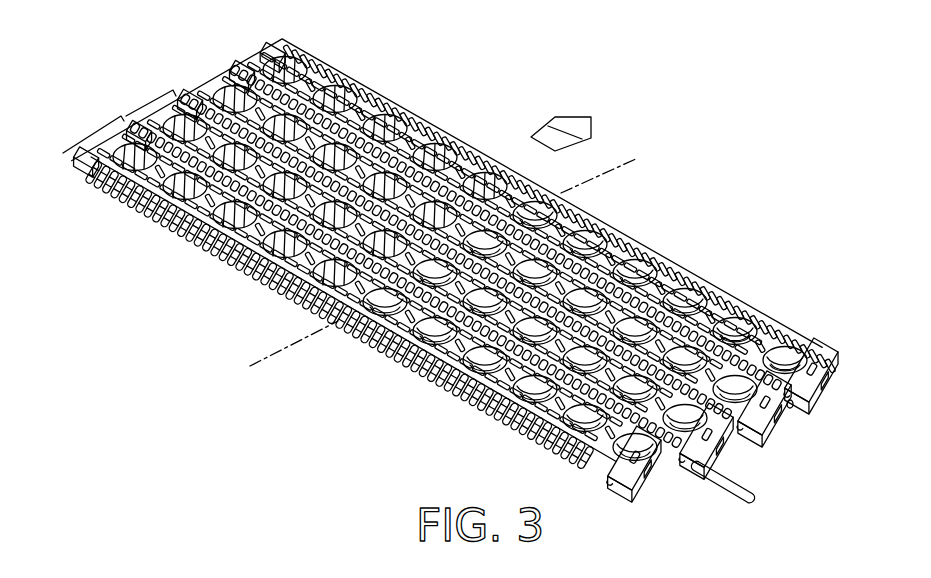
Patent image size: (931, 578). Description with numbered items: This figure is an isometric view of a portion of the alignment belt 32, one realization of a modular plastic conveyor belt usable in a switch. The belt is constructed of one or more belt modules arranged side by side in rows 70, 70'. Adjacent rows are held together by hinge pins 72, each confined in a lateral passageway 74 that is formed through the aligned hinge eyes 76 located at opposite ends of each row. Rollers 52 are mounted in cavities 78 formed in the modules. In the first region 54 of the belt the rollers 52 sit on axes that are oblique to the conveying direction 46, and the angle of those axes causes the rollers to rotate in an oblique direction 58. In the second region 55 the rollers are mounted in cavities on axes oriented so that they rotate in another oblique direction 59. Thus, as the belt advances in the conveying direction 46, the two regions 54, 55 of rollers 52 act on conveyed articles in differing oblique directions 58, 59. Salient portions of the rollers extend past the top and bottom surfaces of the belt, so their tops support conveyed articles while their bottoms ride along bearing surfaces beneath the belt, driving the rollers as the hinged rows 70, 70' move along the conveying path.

The alignment belt 32 is at (685, 133).
The conveying direction 46 is at (542, 120).
The rollers 52 is at (447, 129).
The first region 54 is at (683, 275).
The second region 55 is at (355, 75).
The oblique direction 58 is at (717, 327).
The another oblique direction 59 is at (268, 46).
The row 70 is at (87, 145).
The row 70' is at (177, 105).
The hinge pins 72 is at (722, 478).
The lateral passageways 74 is at (783, 398).
The hinge eyes 76 is at (524, 178).
The cavities 78 is at (787, 345).